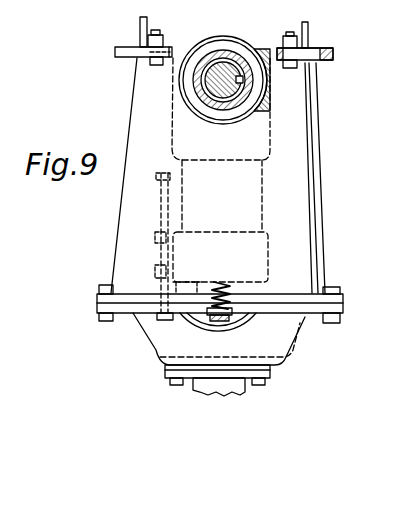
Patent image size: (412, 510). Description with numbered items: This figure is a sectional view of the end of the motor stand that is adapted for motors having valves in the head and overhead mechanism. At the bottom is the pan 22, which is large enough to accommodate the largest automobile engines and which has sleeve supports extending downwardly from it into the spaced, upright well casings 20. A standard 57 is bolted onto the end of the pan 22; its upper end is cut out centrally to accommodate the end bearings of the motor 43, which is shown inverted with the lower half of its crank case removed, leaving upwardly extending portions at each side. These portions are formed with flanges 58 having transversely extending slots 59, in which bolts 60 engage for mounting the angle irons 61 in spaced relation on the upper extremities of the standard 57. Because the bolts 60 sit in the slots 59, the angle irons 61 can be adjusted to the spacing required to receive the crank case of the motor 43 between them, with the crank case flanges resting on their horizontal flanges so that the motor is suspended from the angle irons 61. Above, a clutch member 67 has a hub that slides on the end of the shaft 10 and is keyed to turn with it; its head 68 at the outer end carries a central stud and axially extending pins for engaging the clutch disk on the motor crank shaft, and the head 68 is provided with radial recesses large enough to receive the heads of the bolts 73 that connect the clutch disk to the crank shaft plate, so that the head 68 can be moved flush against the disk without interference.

The shaft 10 is at (228, 72).
The well casing 20 is at (246, 318).
The pan 22 is at (160, 338).
The motor 43 is at (262, 209).
The standard 57 is at (312, 165).
The flange 58 is at (333, 53).
The slot 59 is at (313, 60).
The bolt 60 is at (150, 65).
The angle iron 61 is at (140, 28).
The clutch member 67 is at (243, 57).
The head 68 is at (228, 66).
The bolt 73 is at (193, 388).